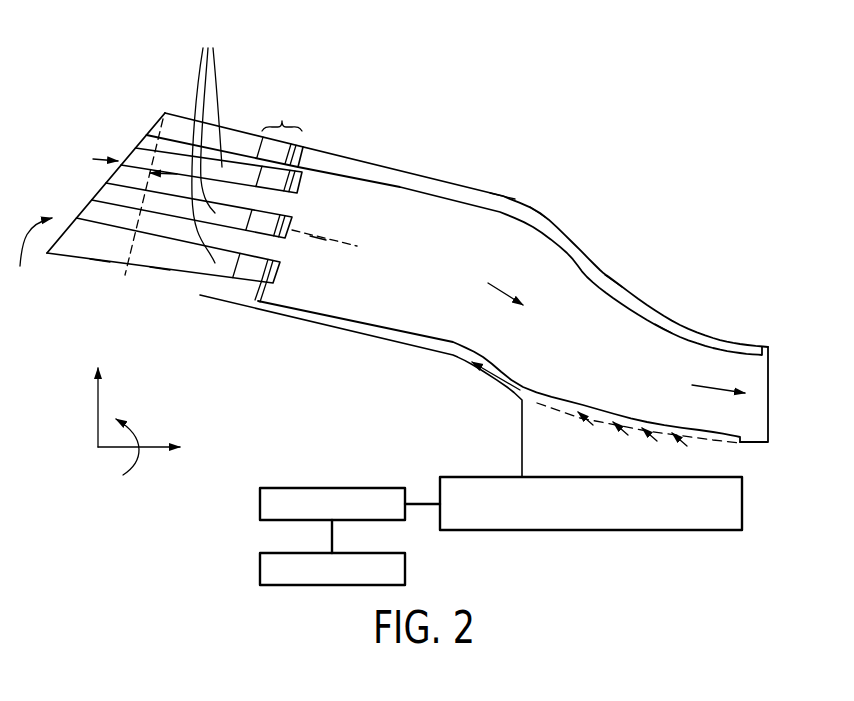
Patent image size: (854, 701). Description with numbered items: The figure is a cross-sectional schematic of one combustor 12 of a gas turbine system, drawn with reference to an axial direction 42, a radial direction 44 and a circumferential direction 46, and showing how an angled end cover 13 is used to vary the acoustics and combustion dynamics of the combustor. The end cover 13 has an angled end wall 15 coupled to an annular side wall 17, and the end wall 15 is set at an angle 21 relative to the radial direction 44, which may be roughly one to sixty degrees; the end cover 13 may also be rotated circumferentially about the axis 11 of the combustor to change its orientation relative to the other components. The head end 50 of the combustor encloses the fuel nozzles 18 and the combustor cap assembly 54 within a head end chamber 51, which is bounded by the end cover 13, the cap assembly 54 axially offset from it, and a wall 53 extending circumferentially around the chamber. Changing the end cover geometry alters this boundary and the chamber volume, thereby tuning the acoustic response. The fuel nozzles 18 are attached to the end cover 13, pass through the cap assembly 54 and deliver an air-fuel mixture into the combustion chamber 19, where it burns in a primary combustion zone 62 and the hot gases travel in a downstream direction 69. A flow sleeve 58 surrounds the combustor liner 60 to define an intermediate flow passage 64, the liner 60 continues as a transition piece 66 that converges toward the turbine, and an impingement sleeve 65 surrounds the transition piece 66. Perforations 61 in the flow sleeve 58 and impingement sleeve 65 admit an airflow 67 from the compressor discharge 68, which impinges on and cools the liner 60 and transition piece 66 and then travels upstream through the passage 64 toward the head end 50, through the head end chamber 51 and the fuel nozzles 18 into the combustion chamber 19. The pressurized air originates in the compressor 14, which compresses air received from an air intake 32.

The axis 11 is at (317, 240).
The combustor 12 is at (633, 163).
The end cover 13 is at (78, 185).
The compressor 14 is at (260, 504).
The angled end wall 15 is at (148, 135).
The side wall 17 is at (100, 271).
The fuel nozzles 18 is at (207, 142).
The combustion chamber 19 is at (372, 203).
The angle 21 is at (172, 173).
The air intake 32 is at (260, 568).
The axial direction 42 is at (117, 450).
The radial direction 44 is at (98, 412).
The circumferential direction 46 is at (140, 424).
The head end 50 is at (34, 253).
The head end chamber 51 is at (158, 273).
The wall 53 is at (230, 120).
The combustor cap assembly 54 is at (282, 113).
The flow sleeve 58 is at (502, 197).
The combustor liner 60 is at (442, 200).
The perforations 61 is at (707, 442).
The primary combustion zone 62 is at (389, 262).
The flow passage 64 is at (535, 220).
The impingement sleeve 65 is at (613, 283).
The transition piece 66 is at (663, 330).
The airflow 67 is at (498, 378).
The compressor discharge 68 is at (602, 531).
The downstream direction 69 is at (493, 285).